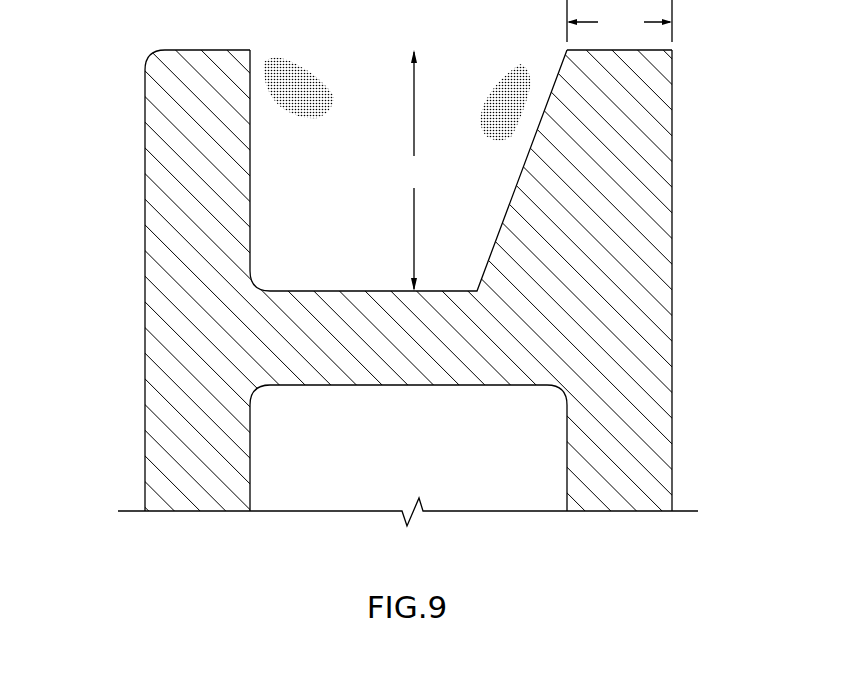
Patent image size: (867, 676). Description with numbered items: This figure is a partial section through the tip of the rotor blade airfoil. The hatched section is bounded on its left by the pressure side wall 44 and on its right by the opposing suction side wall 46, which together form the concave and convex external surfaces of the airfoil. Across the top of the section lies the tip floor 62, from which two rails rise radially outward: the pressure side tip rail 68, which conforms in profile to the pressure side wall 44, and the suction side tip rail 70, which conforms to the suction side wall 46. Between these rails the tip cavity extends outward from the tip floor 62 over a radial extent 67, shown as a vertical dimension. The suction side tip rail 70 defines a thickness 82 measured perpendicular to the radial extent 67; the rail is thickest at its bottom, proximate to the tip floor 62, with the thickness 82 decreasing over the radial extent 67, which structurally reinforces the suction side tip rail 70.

The pressure side wall 44 is at (145, 466).
The suction side wall 46 is at (673, 450).
The tip floor 62 is at (385, 291).
The radial extent 67 is at (413, 170).
The pressure side tip rail 68 is at (216, 49).
The suction side tip rail 70 is at (658, 152).
The thickness 82 is at (619, 21).